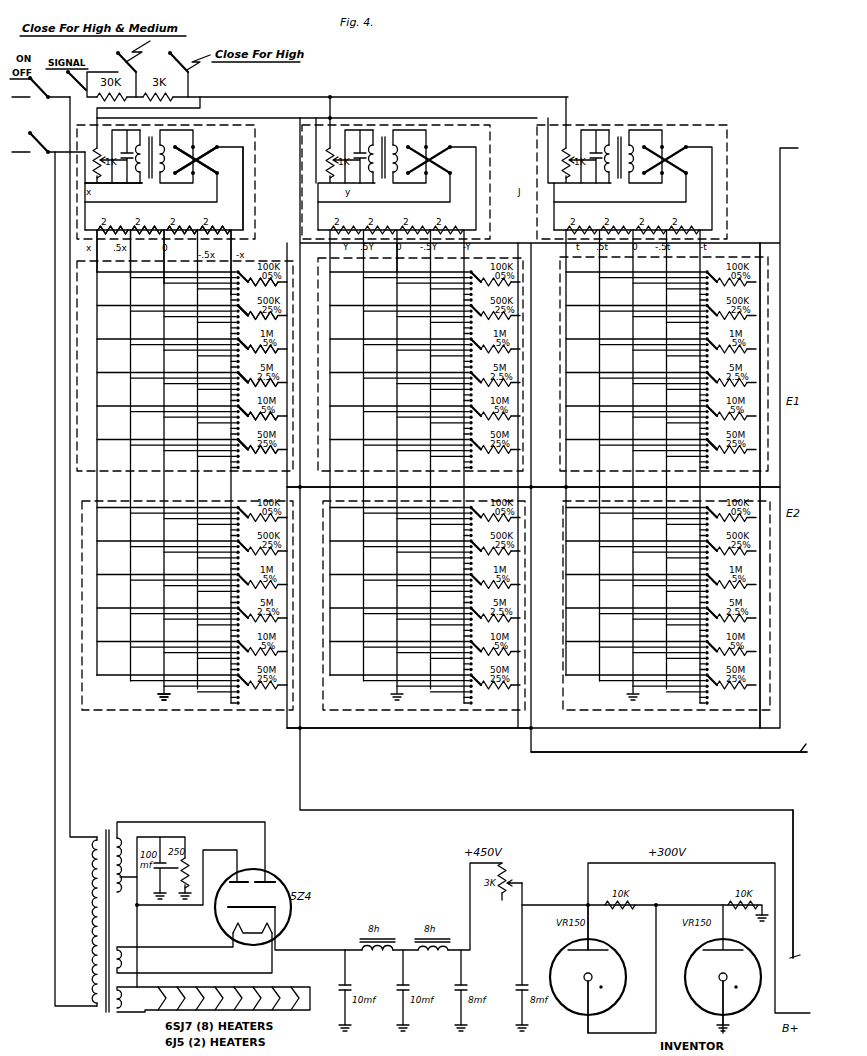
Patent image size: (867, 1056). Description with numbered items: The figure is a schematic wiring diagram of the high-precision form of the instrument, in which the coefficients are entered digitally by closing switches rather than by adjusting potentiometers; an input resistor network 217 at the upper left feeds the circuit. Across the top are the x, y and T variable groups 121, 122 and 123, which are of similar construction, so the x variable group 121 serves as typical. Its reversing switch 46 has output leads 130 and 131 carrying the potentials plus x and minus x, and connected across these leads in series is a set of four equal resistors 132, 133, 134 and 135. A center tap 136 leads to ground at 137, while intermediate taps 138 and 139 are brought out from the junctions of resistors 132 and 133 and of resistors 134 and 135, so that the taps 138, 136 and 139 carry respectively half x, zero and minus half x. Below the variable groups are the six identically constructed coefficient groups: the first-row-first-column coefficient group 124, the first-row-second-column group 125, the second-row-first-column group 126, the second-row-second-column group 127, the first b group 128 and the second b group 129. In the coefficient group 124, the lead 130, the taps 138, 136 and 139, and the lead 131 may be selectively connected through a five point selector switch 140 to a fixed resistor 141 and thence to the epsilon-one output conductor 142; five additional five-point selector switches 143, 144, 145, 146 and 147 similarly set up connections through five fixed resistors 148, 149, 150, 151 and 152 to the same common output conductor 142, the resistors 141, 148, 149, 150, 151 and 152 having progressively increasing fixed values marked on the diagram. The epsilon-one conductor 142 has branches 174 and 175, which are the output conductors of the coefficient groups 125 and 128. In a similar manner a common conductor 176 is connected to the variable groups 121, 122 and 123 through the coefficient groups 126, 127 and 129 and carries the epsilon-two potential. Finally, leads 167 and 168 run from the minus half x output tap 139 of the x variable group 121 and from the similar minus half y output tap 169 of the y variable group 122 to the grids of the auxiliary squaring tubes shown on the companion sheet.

The input attenuator resistors 217 is at (100, 98).
The x variable group 121 is at (72, 190).
The y variable group 122 is at (302, 171).
The T variable group 123 is at (537, 176).
The reversing switch 46 is at (200, 150).
The output lead 130 is at (110, 200).
The output lead 131 is at (243, 192).
The resistor 132 is at (105, 222).
The resistor 133 is at (140, 222).
The resistor 134 is at (176, 222).
The resistor 135 is at (210, 222).
The center tap 136 is at (158, 240).
The intermediate tap 138 is at (128, 246).
The intermediate tap 139 is at (192, 244).
The five point selector switch 140 is at (243, 262).
The fixed resistor 141 is at (283, 282).
The epsilon-one output conductor 142 is at (290, 272).
The five-point selector switch 143 is at (238, 308).
The five-point selector switch 144 is at (238, 341).
The five-point selector switch 145 is at (238, 374).
The five-point selector switch 146 is at (238, 407).
The five-point selector switch 147 is at (238, 440).
The fixed resistor 148 is at (283, 316).
The fixed resistor 149 is at (283, 349).
The fixed resistor 150 is at (283, 382).
The fixed resistor 151 is at (283, 416).
The fixed resistor 152 is at (283, 456).
The a1,1 coefficient group 124 is at (77, 354).
The a1,2 coefficient group 125 is at (315, 452).
The a2,1 coefficient group 126 is at (82, 588).
The a2,2 coefficient group 127 is at (318, 572).
The b1 coefficient group 128 is at (555, 385).
The b2 coefficient group 129 is at (562, 560).
The ground 137 is at (162, 708).
The -.5y output tap 169 is at (424, 255).
The branch 174 is at (518, 487).
The branch 175 is at (752, 460).
The common conductor 176 is at (780, 548).
The lead 168 is at (531, 740).
The lead 167 is at (793, 965).